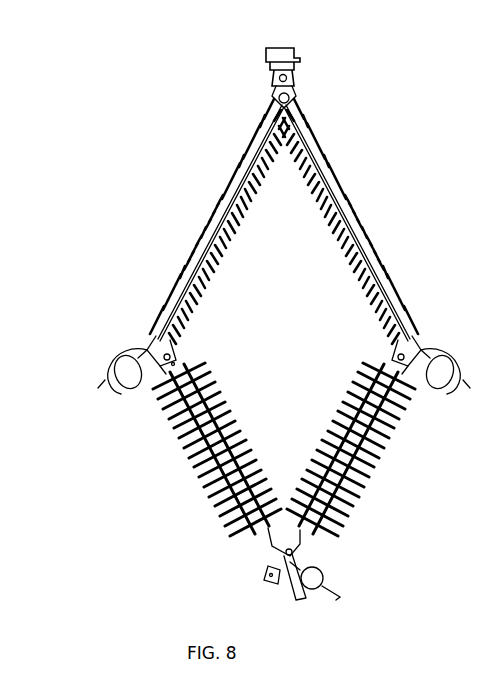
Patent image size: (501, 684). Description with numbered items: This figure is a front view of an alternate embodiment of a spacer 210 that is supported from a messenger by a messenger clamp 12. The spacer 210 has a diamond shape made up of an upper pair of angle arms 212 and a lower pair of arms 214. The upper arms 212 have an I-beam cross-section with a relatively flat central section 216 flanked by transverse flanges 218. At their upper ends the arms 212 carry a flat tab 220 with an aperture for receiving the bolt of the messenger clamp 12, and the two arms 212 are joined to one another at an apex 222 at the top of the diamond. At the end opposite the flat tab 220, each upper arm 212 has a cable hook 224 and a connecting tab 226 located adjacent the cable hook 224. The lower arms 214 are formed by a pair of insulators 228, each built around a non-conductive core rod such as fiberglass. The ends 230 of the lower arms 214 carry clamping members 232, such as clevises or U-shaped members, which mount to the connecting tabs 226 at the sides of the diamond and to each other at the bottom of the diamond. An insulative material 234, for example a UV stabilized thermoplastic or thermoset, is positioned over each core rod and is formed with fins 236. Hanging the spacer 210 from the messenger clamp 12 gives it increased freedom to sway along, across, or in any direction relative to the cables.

The messenger clamp 12 is at (265, 73).
The spacer 210 is at (168, 199).
The upper pair of angle arms 212 is at (248, 155).
The lower pair of arms 214 is at (235, 490).
The central section 216 is at (190, 237).
The transverse flanges 218 is at (175, 270).
The flat tab 220 is at (305, 104).
The apex 222 is at (291, 91).
The cable hook 224 is at (120, 380).
The connecting tab 226 is at (165, 354).
The insulators 228 is at (210, 458).
The ends of the lower arms 230 is at (170, 365).
The clamping members 232 is at (169, 360).
The insulative material 234 is at (240, 512).
The fins 236 is at (235, 500).